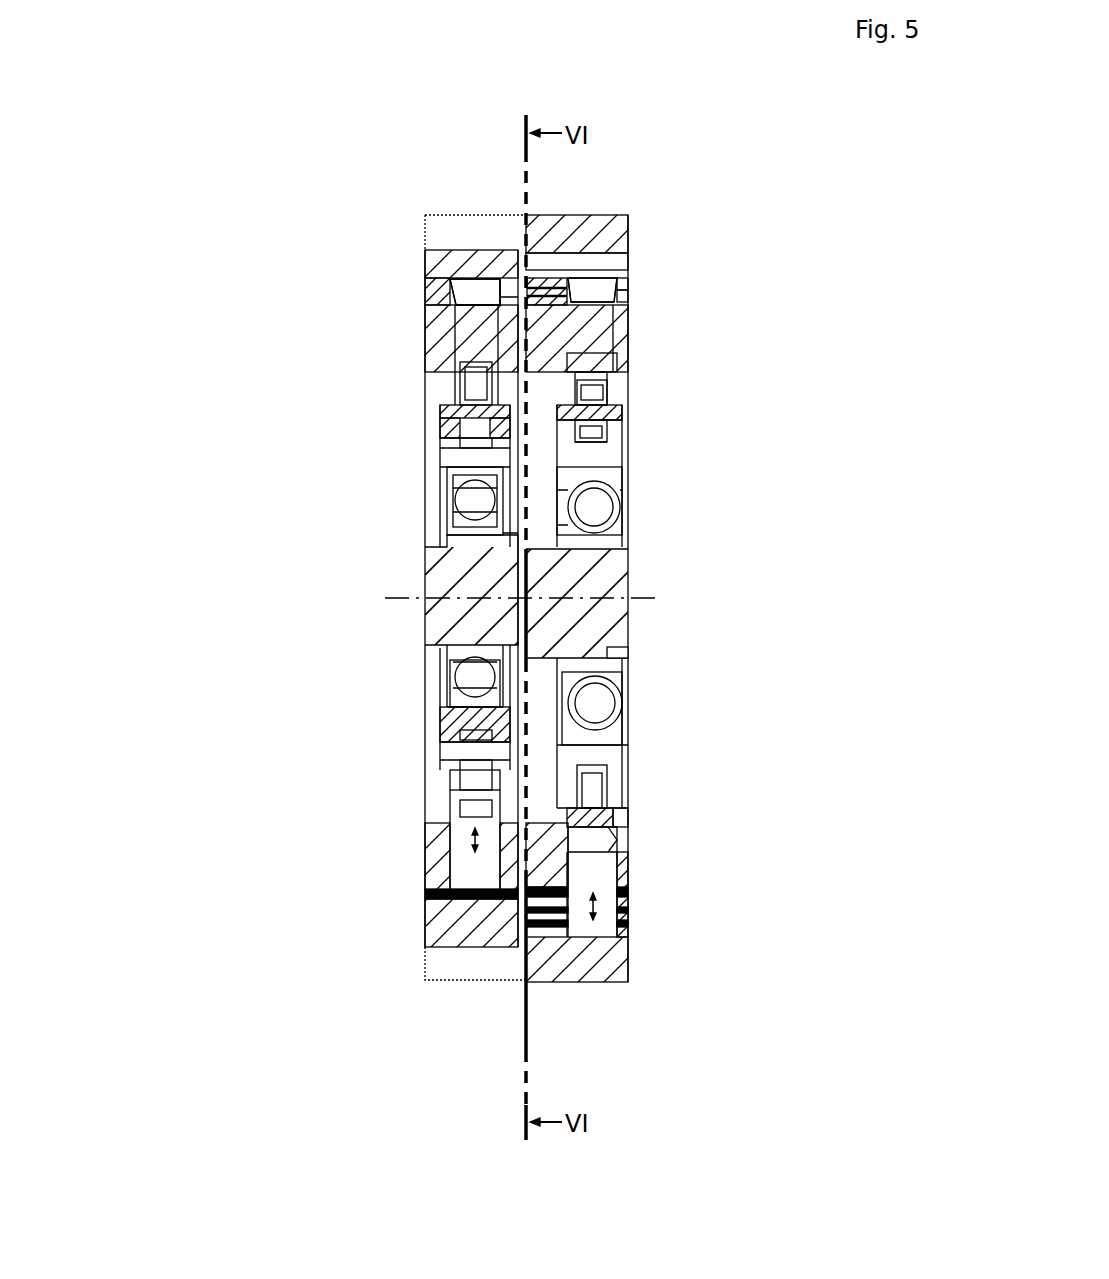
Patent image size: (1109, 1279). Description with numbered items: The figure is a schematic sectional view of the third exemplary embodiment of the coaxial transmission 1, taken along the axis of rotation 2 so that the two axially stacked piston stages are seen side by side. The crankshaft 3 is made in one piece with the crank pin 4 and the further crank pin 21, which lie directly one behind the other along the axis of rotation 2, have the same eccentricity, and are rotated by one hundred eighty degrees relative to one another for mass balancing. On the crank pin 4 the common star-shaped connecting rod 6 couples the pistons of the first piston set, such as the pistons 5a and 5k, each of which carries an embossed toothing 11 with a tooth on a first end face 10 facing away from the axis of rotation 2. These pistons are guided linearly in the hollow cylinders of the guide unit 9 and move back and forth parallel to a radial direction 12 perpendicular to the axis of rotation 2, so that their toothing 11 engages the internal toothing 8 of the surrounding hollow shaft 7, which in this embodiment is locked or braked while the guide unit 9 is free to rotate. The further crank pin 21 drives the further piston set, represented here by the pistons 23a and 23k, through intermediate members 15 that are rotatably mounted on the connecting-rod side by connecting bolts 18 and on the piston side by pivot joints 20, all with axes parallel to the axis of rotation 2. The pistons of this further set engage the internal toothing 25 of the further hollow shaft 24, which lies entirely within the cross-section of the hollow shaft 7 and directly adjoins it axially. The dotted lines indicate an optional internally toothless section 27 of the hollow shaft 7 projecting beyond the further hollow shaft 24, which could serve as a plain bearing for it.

The coaxial transmission 1 is at (283, 150).
The axis of rotation 2 is at (383, 600).
The crankshaft 3 is at (138, 622).
The crank pin 4 is at (620, 642).
The piston 5a is at (625, 300).
The sealing chamber 5k is at (605, 877).
The star-shaped connecting rod 6 is at (620, 537).
The hollow shaft 7 is at (585, 232).
The internal toothing 8 is at (625, 260).
The guide unit 9 is at (620, 340).
The first end face 10 is at (475, 290).
The toothing 11 is at (475, 290).
The radial direction 12 is at (462, 826).
The intermediate member 15 is at (445, 406).
The connecting bolt 18 is at (447, 428).
The pivot joint 20 is at (455, 390).
The further crank pin 21 is at (462, 554).
The piston of the further piston set 23a is at (460, 347).
The piston of the further piston set 23k is at (470, 890).
The further hollow shaft 24 is at (510, 265).
The internal toothing 25 is at (440, 290).
The internally toothless section 27 is at (470, 980).